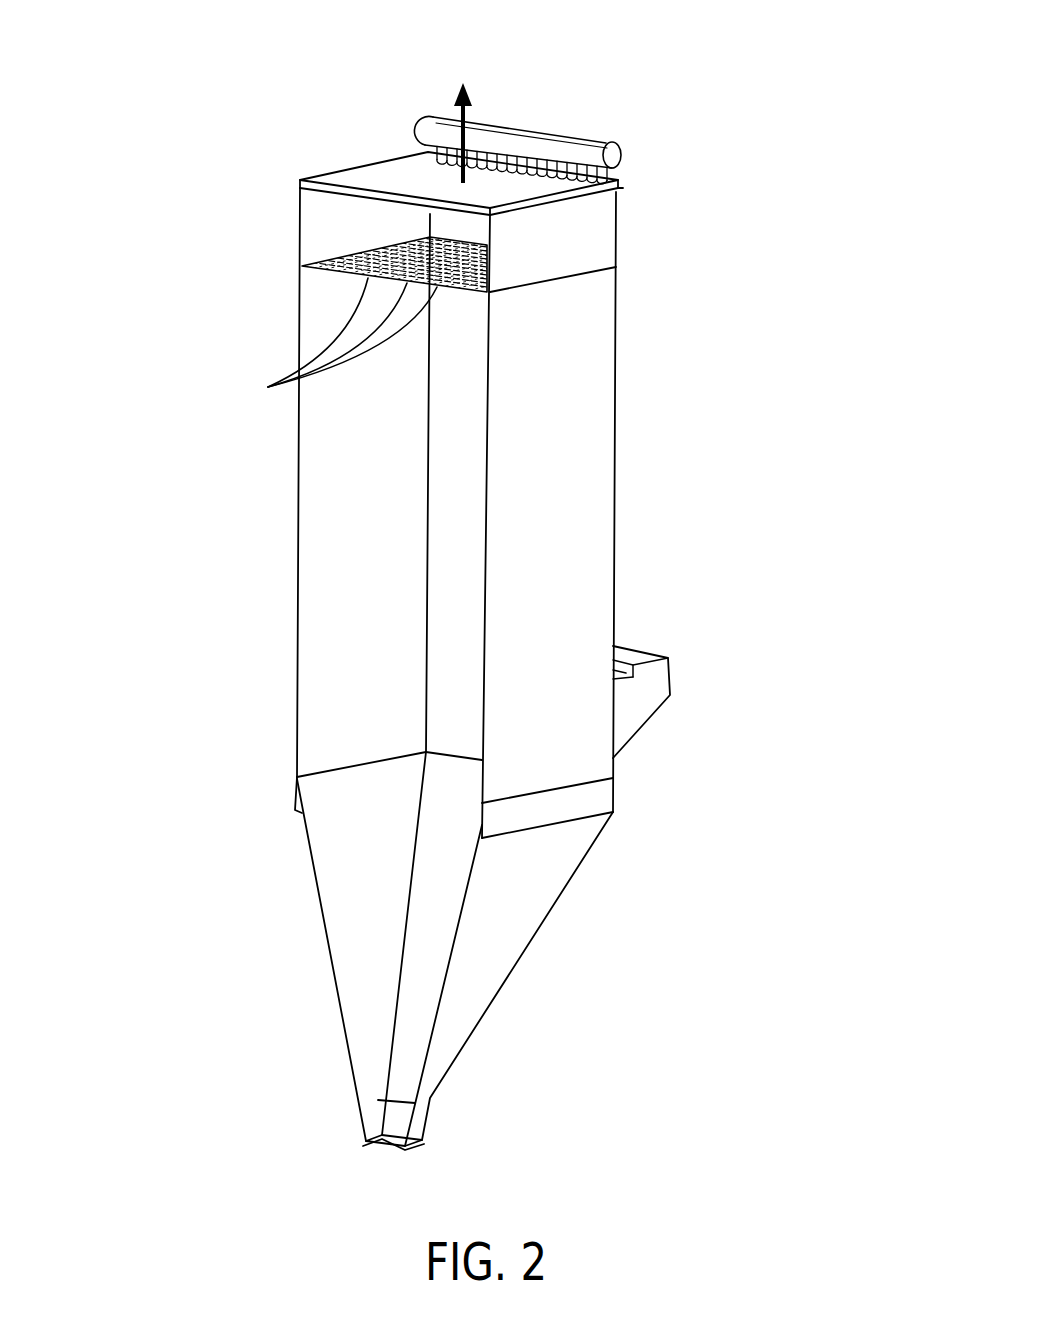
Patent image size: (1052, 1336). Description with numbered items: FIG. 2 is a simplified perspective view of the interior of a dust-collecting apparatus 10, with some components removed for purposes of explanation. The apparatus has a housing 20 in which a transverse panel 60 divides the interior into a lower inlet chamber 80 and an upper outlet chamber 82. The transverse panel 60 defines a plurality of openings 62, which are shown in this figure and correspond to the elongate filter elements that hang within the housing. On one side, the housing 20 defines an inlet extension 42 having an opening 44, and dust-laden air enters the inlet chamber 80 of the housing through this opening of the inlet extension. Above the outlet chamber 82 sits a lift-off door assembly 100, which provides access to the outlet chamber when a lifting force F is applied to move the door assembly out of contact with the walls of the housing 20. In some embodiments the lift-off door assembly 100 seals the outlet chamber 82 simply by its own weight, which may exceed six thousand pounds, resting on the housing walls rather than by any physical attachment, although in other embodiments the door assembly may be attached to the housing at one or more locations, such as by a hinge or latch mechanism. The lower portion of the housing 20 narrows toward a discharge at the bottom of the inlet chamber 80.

The dust-collecting apparatus 10 is at (208, 334).
The housing 20 is at (583, 405).
The inlet extension 42 is at (645, 698).
The opening 44 is at (637, 660).
The transverse panel 60 is at (345, 252).
The openings 62 is at (336, 341).
The inlet chamber 80 is at (393, 489).
The outlet chamber 82 is at (330, 220).
The lift-off door assembly 100 is at (583, 126).